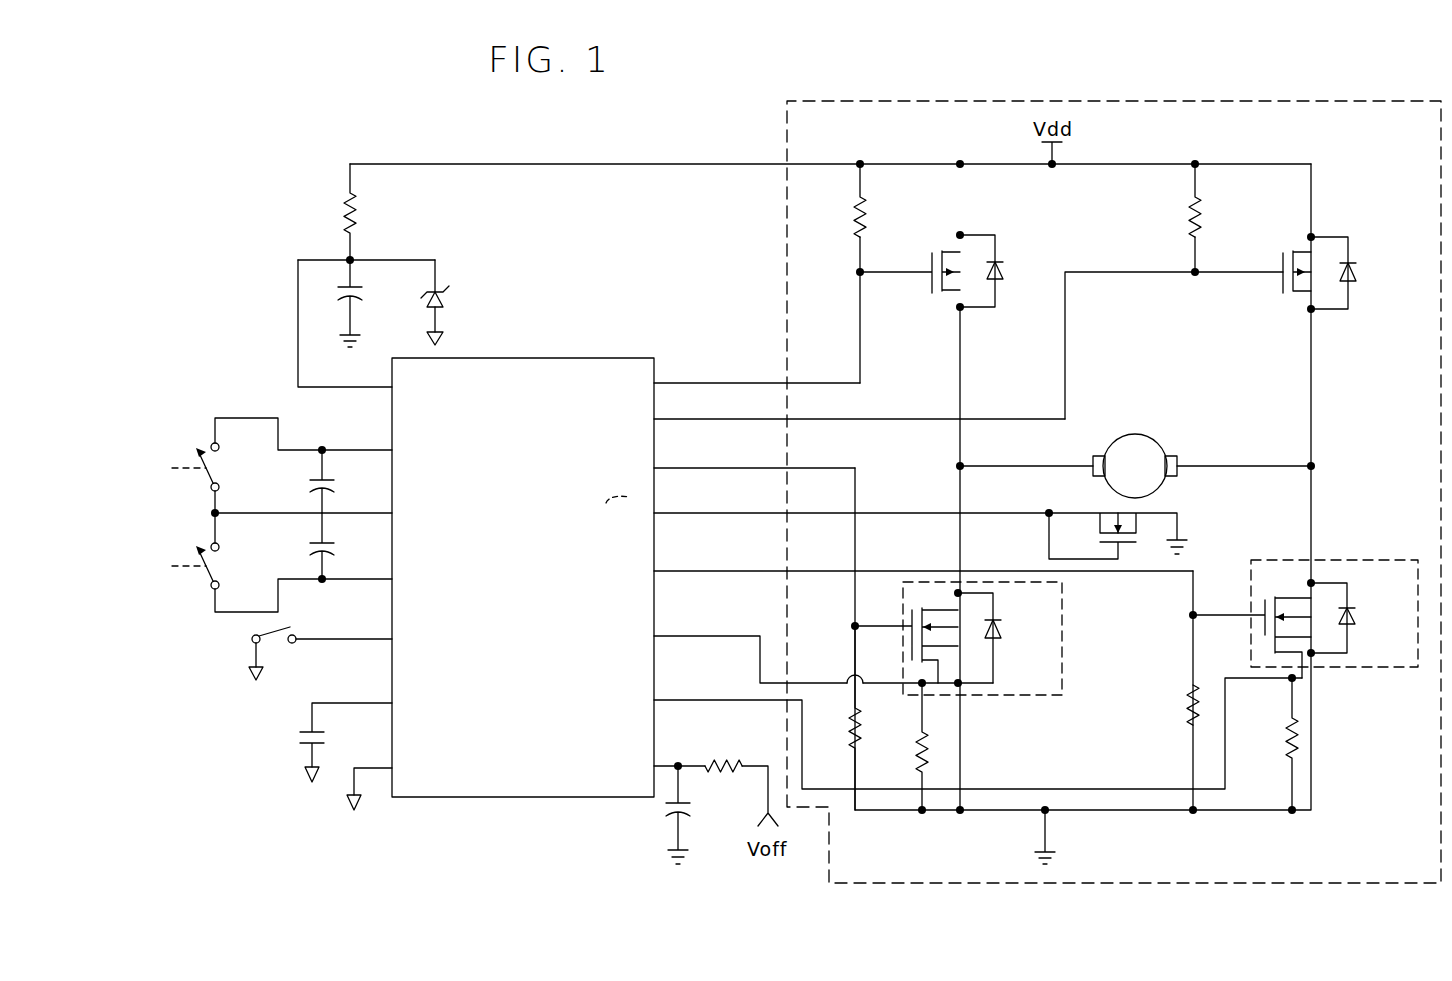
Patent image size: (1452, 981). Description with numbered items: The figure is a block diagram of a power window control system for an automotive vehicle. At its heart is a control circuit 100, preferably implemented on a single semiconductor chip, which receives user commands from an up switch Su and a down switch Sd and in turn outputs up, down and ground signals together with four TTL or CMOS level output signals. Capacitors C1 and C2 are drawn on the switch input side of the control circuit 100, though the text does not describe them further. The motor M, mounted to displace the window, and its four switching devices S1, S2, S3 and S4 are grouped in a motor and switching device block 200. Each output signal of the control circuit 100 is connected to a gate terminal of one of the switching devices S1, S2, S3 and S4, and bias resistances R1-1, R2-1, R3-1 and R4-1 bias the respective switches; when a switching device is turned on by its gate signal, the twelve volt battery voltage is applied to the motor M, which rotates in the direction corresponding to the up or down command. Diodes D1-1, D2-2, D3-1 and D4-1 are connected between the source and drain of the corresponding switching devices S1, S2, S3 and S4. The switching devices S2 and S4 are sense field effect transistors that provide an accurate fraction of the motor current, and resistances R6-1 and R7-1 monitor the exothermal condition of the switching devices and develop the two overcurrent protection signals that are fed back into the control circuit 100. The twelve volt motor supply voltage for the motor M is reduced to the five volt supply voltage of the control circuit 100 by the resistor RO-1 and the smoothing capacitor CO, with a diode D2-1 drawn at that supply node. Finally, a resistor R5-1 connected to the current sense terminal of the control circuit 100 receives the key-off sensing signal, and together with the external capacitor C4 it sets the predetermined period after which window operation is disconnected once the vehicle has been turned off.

The control circuit 100 is at (596, 358).
The motor and switching device block 200 is at (786, 222).
The resistor RO-1 is at (321, 214).
The smoothing capacitor CO is at (366, 303).
The diode D2-1 is at (461, 302).
The up switch Su is at (282, 465).
The down switch Sd is at (282, 560).
The capacitor C1 is at (340, 481).
The capacitor C2 is at (340, 546).
The bias resistance R1-1 is at (888, 200).
The switching device S1 is at (910, 284).
The diode D1-1 is at (1008, 271).
The bias resistance R3-1 is at (1169, 200).
The switching device S3 is at (1295, 261).
The diode D3-1 is at (1361, 273).
The motor M is at (1135, 428).
The switching device S2 is at (1066, 672).
The diode D2-2 is at (1006, 636).
The bias resistance R2-1 is at (880, 718).
The resistance R6-1 is at (899, 746).
The switching device S4 is at (1378, 558).
The diode D4-1 is at (1359, 618).
The bias resistance R4-1 is at (1167, 705).
The resistance R7-1 is at (1265, 744).
The resistor R5-1 is at (727, 753).
The capacitor C4 is at (695, 813).